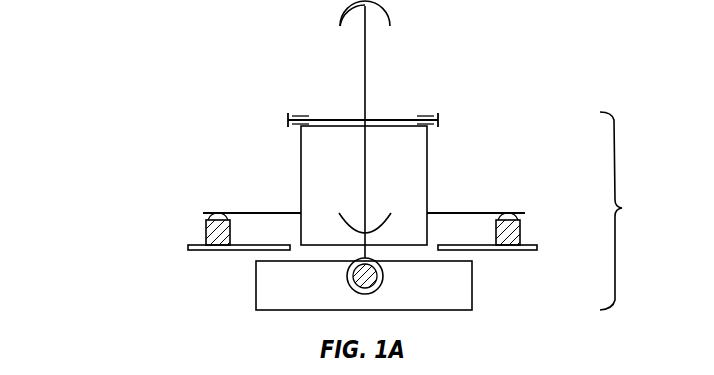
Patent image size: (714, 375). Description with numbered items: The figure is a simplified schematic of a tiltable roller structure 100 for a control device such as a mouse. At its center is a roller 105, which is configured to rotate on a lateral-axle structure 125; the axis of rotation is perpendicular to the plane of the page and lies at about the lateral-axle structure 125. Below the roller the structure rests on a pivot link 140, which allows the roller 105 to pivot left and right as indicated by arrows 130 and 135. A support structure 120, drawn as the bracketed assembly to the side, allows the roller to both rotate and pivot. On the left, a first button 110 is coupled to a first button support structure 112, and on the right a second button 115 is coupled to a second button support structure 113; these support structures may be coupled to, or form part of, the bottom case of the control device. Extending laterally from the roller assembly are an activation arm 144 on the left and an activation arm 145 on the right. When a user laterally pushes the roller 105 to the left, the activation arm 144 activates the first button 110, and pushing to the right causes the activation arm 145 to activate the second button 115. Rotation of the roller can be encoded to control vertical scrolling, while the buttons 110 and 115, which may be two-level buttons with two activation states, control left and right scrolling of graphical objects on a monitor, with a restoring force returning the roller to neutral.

The tiltable roller structure 100 is at (98, 87).
The roller 105 is at (366, 84).
The first button 110 is at (206, 232).
The first button support structure 112 is at (238, 251).
The second button support structure 113 is at (488, 251).
The second button 115 is at (521, 232).
The support structure 120 is at (628, 211).
The lateral-axle structure 125 is at (441, 118).
The arrow 130 is at (397, 14).
The arrow 135 is at (333, 14).
The pivot link 140 is at (383, 275).
The activation arm 144 is at (240, 212).
The activation arm 145 is at (487, 212).